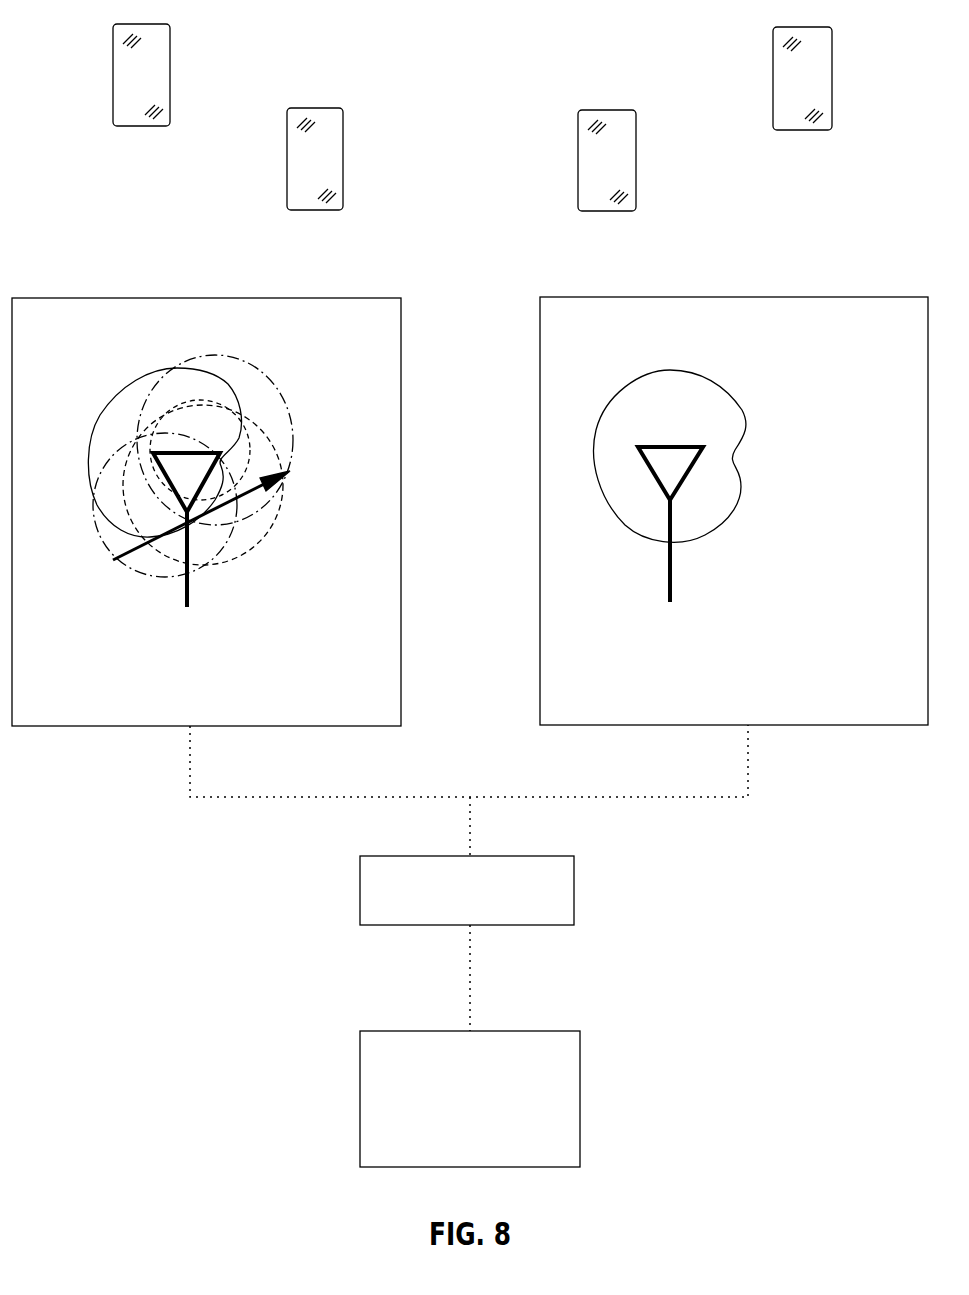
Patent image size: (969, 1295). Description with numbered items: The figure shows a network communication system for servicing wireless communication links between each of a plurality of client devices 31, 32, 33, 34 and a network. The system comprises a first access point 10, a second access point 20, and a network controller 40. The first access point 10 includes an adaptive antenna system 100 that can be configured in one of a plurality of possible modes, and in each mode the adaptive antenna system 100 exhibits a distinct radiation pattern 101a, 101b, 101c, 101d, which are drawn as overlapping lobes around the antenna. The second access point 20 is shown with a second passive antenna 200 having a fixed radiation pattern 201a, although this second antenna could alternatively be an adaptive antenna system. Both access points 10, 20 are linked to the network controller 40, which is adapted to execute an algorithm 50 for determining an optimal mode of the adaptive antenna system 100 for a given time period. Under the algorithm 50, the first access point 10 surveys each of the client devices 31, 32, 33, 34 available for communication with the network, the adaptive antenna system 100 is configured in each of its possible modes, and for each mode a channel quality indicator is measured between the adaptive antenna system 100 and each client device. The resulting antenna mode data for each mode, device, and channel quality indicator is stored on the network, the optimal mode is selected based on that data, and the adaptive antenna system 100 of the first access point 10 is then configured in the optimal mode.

The first access point 10 is at (402, 398).
The second access point 20 is at (540, 507).
The client device 31 is at (112, 82).
The client device 32 is at (287, 162).
The client device 33 is at (636, 163).
The client device 34 is at (832, 78).
The network controller 40 is at (358, 1103).
The algorithm 50 is at (358, 893).
The adaptive antenna system 100 is at (190, 594).
The radiation pattern 101a is at (104, 394).
The radiation pattern 101b is at (287, 402).
The radiation pattern 101c is at (276, 521).
The radiation pattern 101d is at (151, 578).
The second passive antenna 200 is at (673, 588).
The fixed radiation pattern 201a is at (634, 380).